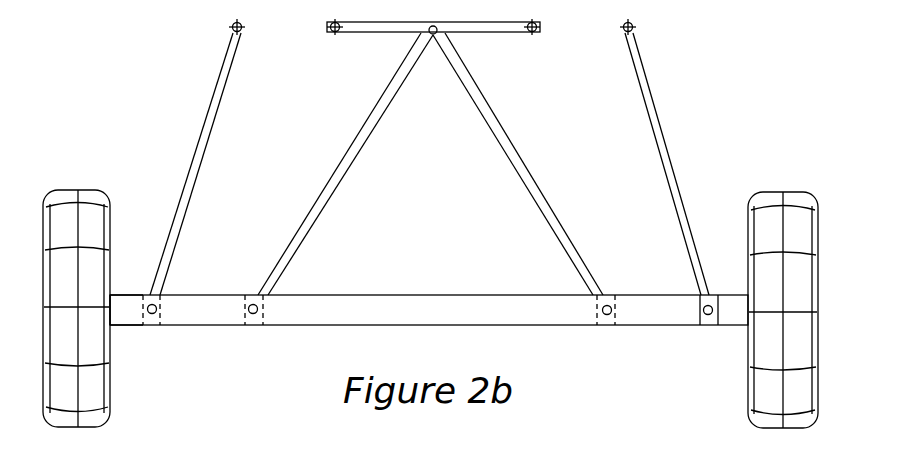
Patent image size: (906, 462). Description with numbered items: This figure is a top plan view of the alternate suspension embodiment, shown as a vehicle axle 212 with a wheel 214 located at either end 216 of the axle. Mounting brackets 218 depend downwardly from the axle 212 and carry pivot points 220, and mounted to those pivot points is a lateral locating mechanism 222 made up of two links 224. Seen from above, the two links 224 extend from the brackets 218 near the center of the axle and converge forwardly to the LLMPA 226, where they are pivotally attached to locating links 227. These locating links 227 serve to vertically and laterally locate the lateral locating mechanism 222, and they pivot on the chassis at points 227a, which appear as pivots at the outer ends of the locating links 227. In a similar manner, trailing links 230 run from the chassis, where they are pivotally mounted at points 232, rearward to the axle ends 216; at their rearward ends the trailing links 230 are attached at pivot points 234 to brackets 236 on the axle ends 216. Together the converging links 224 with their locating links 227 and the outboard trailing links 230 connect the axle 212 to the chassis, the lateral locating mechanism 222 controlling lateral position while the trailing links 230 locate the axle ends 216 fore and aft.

The axle 212 is at (522, 312).
The wheels 214 is at (93, 200).
The axle end 216 is at (127, 308).
The mounting brackets 218 is at (247, 297).
The pivot points 220 is at (258, 313).
The lateral locating mechanism 222 is at (430, 157).
The links 224 is at (477, 103).
The LLMPA 226 is at (433, 36).
The locating links 227 is at (377, 32).
The chassis pivot points 227a is at (335, 32).
The trailing links 230 is at (208, 123).
The chassis pivot points 232 is at (240, 32).
The rearward end pivot points 234 is at (152, 314).
The brackets 236 is at (707, 318).